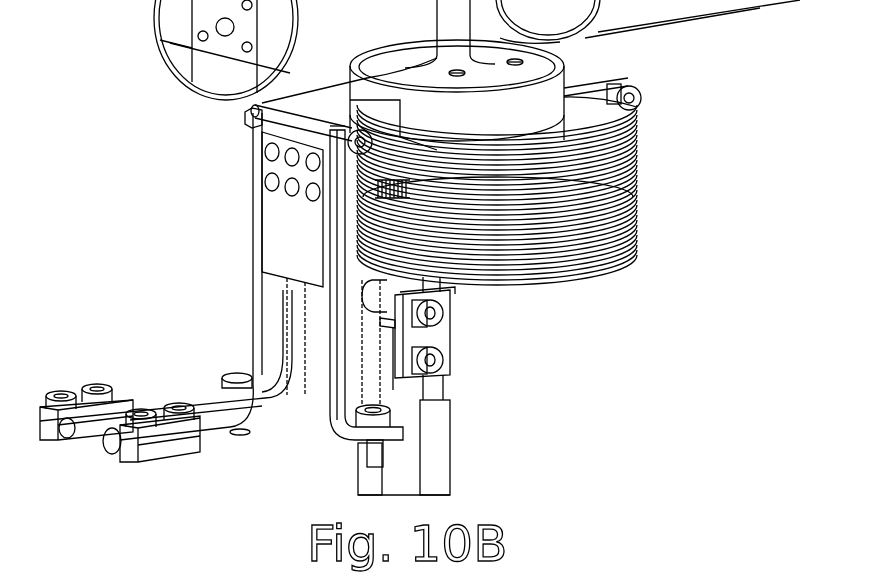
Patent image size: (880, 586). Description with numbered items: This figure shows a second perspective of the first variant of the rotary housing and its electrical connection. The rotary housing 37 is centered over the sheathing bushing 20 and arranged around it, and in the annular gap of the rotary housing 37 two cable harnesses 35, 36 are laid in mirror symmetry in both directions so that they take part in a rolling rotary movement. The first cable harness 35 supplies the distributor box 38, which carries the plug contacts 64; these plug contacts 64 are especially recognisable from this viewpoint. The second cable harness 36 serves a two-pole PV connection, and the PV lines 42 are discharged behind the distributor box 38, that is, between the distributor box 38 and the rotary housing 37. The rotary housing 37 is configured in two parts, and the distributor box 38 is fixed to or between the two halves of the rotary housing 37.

The sheathing bushing 20 is at (560, 60).
The rotary housing 37 is at (623, 83).
The first cable harness 35 is at (633, 138).
The second cable harness 36 is at (633, 200).
The distributor box 38 is at (278, 207).
The plug contacts 64 is at (263, 150).
The PV lines 42 is at (275, 425).